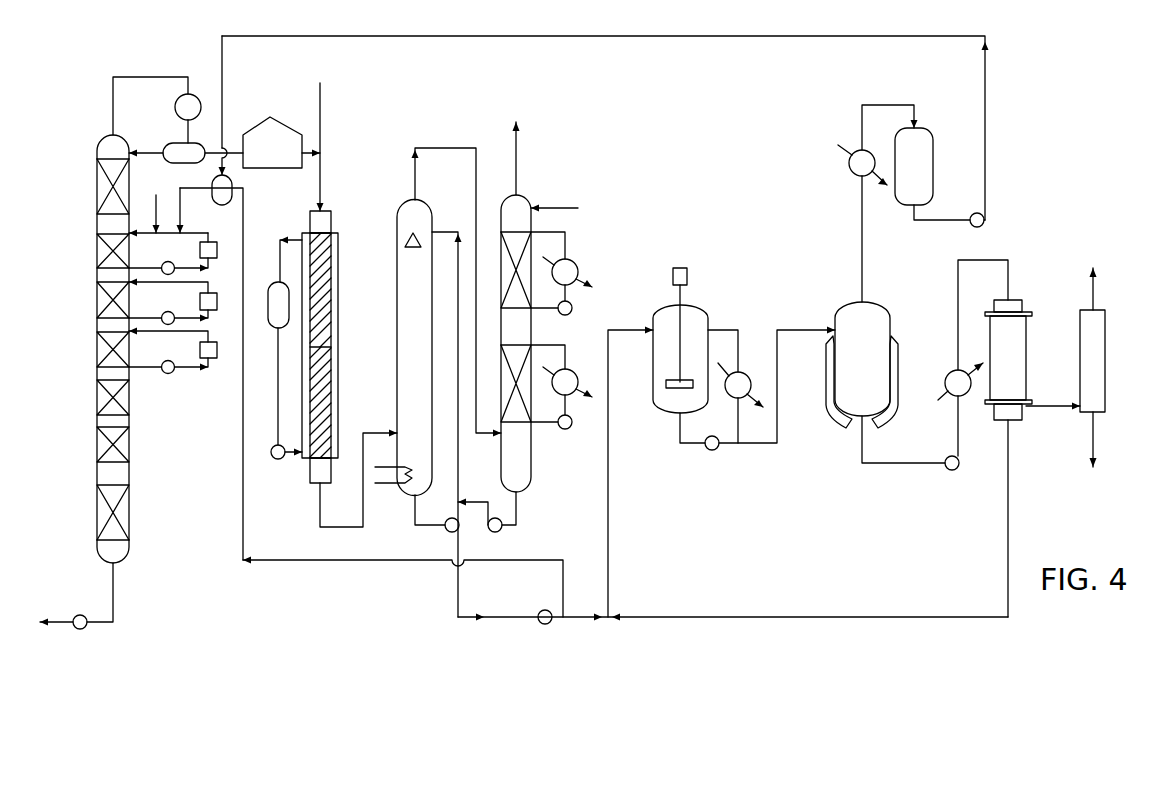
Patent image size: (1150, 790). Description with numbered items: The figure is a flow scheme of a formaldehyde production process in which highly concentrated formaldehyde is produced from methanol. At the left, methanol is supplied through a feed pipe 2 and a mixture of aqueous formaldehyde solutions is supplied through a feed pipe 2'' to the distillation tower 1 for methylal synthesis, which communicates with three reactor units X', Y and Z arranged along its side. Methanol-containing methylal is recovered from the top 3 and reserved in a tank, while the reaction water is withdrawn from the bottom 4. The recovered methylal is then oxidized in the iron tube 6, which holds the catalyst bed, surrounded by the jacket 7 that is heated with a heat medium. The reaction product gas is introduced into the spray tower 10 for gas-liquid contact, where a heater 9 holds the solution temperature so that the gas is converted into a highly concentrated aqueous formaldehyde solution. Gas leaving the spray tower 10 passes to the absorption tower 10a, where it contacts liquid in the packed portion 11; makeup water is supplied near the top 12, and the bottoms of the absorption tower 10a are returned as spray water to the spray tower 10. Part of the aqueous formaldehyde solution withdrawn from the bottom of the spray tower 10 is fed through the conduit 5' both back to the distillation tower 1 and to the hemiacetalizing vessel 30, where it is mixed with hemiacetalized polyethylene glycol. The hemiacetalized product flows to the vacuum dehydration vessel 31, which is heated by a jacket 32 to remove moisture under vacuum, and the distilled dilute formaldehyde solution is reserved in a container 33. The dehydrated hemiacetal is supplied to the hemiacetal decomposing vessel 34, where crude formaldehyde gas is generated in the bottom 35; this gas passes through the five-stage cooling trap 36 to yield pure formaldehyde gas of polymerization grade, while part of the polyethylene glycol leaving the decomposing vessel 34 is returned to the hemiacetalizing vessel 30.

The distillation tower 1 is at (97, 280).
The feed pipe 2 is at (168, 212).
The feed pipe 2'' is at (193, 210).
The top 3 is at (113, 120).
The bottom 4 is at (113, 597).
The conduit 5' is at (371, 402).
The iron tube 6 is at (331, 224).
The jacket 7 is at (338, 272).
The heater 9 is at (381, 484).
The spray tower 10 is at (397, 370).
The absorption tower 10a is at (500, 208).
The packed portion 11 is at (501, 385).
The top 12 is at (519, 180).
The hemiacetalizing vessel 30 is at (653, 378).
The vacuum dehydration vessel 31 is at (890, 318).
The jacket 32 is at (826, 385).
The container 33 is at (933, 165).
The hemiacetal decomposing vessel 34 is at (1026, 368).
The bottom 35 is at (1056, 409).
The cooling trap 36 is at (1105, 372).
The reactor unit X' is at (185, 254).
The reactor unit Y is at (217, 303).
The reactor unit Z is at (217, 351).